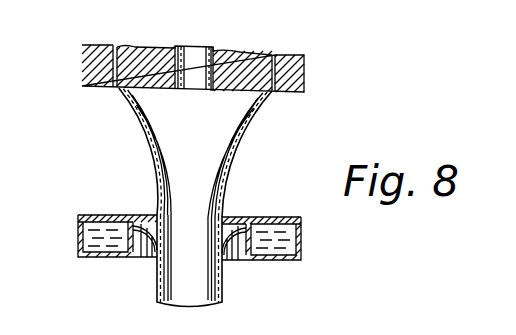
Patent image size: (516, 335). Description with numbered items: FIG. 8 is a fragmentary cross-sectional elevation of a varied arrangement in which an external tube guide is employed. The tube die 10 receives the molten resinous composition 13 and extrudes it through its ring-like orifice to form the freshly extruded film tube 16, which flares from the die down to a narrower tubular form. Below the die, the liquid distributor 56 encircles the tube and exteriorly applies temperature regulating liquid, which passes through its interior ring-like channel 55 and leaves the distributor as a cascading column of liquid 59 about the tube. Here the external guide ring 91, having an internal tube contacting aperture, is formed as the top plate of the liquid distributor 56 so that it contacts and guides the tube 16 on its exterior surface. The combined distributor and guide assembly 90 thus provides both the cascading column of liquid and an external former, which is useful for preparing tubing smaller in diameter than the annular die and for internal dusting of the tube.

The tube die 10 is at (137, 58).
The molten resinous composition 13 is at (115, 47).
The film tube 16 is at (148, 140).
The ring-like channel 55 is at (80, 242).
The liquid distributor 56 is at (78, 233).
The cascading column of liquid 59 is at (156, 285).
The collar assembly 90 is at (92, 271).
The external guide ring 91 is at (113, 215).